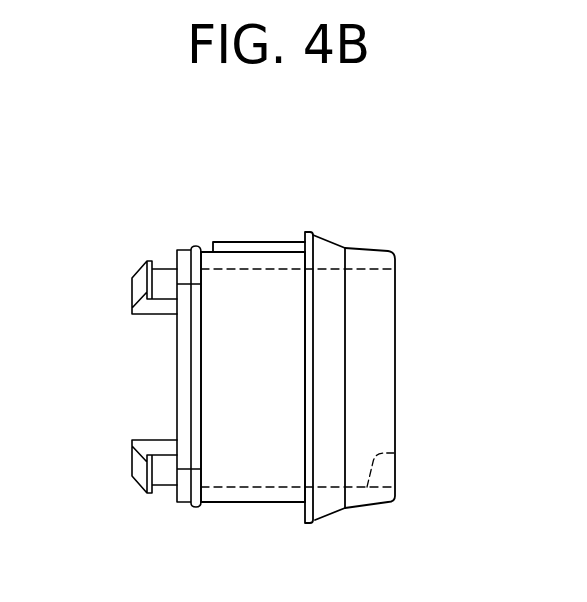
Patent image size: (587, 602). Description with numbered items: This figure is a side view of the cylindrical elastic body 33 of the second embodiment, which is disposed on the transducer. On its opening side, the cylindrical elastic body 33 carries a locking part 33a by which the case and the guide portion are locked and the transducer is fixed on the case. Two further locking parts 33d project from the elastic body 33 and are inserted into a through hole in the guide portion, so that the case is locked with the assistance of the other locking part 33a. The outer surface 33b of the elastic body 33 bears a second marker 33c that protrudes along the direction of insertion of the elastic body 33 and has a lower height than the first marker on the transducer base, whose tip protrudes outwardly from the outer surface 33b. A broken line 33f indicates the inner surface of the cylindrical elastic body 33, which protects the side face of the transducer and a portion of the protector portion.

The cylindrical elastic body 33 is at (416, 234).
The locking part 33a is at (332, 240).
The outer surface 33b is at (242, 465).
The second marker 33c is at (237, 241).
The locking part 33d is at (136, 276).
The broken line 33f is at (395, 454).